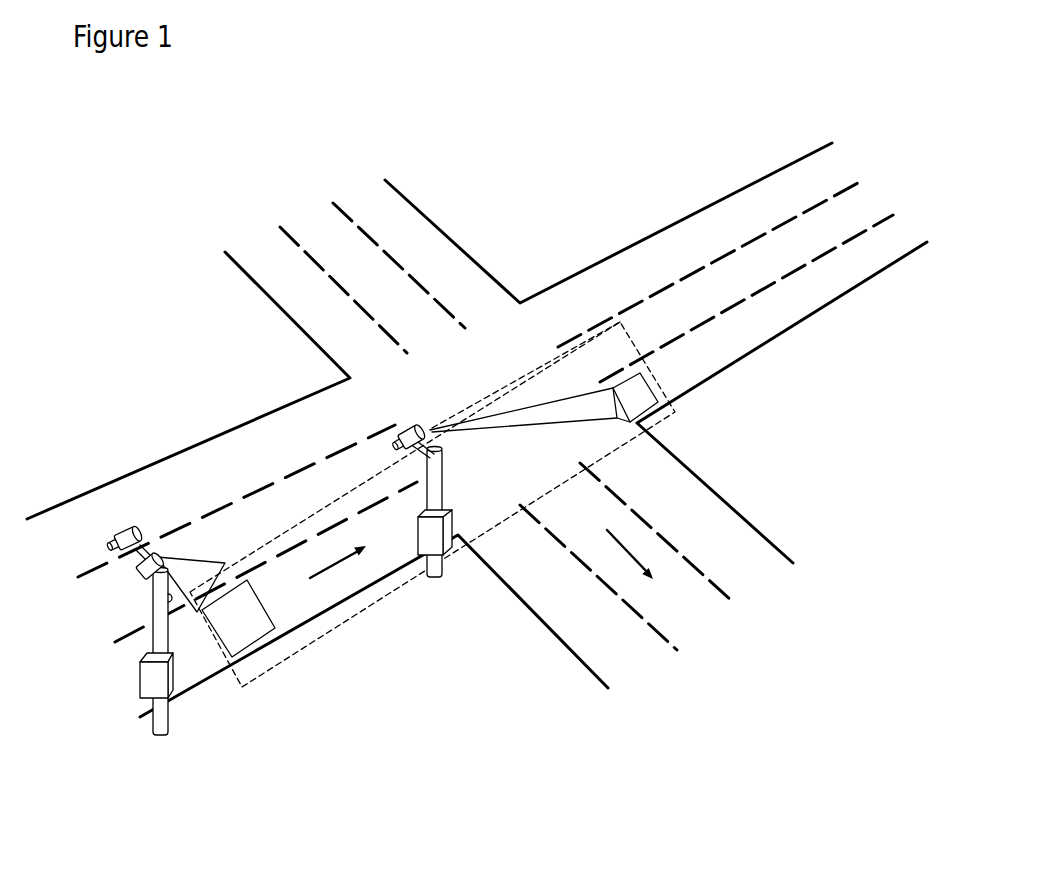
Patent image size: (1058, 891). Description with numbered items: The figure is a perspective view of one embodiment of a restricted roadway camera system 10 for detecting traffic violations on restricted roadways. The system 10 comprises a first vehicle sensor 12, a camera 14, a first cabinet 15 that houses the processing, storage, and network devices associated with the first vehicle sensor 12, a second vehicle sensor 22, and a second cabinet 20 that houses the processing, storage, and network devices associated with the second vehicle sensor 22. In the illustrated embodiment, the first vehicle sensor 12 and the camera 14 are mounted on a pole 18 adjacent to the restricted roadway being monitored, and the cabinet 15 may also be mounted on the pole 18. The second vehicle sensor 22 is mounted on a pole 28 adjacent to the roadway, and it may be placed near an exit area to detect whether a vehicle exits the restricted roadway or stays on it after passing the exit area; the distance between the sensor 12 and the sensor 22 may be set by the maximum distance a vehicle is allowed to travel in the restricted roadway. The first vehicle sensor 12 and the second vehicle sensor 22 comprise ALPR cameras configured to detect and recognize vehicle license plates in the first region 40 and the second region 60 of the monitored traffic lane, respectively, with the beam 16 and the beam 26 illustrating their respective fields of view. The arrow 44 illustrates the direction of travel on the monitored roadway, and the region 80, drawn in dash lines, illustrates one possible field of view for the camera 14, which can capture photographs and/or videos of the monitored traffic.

The restricted roadway camera system 10 is at (422, 719).
The first vehicle sensor 12 is at (135, 579).
The camera 14 is at (113, 546).
The first cabinet 15 is at (139, 678).
The beam 16 is at (205, 559).
The pole 18 is at (162, 737).
The second cabinet 20 is at (457, 547).
The second vehicle sensor 22 is at (412, 425).
The beam 26 is at (500, 397).
The pole 28 is at (436, 578).
The first region 40 is at (260, 643).
The arrow 44 is at (333, 563).
The second region 60 is at (660, 416).
The region 80 is at (660, 380).